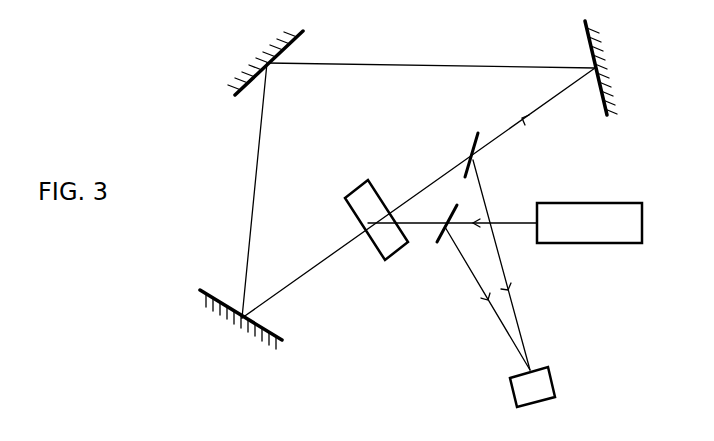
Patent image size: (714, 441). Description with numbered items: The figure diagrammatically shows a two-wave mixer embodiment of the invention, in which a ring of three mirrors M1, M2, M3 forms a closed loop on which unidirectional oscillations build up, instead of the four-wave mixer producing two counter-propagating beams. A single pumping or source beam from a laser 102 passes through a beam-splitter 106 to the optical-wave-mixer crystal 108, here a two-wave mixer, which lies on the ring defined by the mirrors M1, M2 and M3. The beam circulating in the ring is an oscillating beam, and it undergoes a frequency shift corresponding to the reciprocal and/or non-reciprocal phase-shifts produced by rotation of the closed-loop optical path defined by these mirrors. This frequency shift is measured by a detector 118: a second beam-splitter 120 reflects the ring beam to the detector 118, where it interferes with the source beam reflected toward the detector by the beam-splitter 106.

The laser 102 is at (612, 202).
The beam-splitter 106 is at (440, 240).
The optical-wave-mixer crystal 108 is at (365, 182).
The detector 118 is at (552, 377).
The second beam-splitter 120 is at (472, 143).
The mirror M1 is at (241, 328).
The mirror M2 is at (255, 59).
The mirror M3 is at (622, 68).